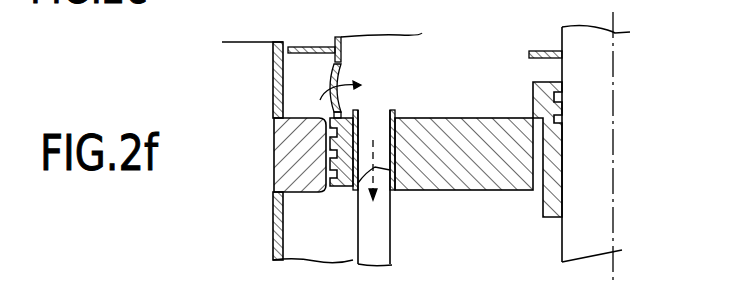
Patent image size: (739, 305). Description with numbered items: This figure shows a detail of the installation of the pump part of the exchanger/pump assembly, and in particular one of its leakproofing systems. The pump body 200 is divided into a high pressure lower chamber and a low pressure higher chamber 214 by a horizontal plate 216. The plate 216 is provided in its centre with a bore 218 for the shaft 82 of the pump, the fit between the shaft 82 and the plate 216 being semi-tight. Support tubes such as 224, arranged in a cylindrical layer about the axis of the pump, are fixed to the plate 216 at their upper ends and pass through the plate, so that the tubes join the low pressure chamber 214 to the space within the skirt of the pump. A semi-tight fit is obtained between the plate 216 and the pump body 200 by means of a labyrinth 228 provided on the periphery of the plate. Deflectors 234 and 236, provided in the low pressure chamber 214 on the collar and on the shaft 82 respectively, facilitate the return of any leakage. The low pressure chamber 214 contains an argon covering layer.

The pump body 200 is at (282, 89).
The labyrinth 228 is at (323, 158).
The deflector 234 is at (320, 47).
The low pressure higher chamber 214 is at (400, 71).
The deflector 236 is at (536, 51).
The horizontal plate 216 is at (468, 130).
The support tube 224 is at (383, 236).
The bore 218 is at (560, 197).
The shaft 82 is at (620, 252).